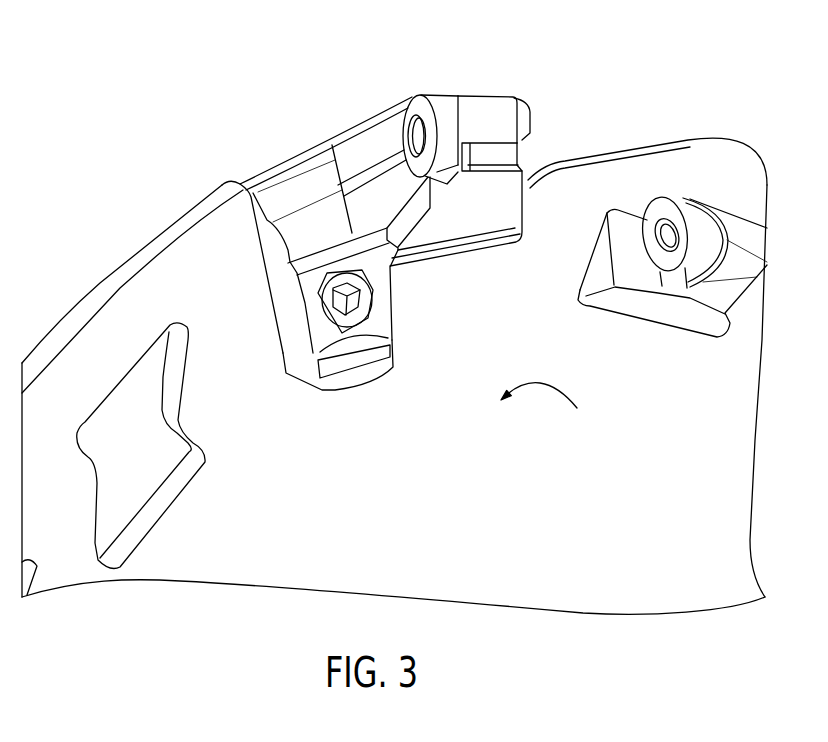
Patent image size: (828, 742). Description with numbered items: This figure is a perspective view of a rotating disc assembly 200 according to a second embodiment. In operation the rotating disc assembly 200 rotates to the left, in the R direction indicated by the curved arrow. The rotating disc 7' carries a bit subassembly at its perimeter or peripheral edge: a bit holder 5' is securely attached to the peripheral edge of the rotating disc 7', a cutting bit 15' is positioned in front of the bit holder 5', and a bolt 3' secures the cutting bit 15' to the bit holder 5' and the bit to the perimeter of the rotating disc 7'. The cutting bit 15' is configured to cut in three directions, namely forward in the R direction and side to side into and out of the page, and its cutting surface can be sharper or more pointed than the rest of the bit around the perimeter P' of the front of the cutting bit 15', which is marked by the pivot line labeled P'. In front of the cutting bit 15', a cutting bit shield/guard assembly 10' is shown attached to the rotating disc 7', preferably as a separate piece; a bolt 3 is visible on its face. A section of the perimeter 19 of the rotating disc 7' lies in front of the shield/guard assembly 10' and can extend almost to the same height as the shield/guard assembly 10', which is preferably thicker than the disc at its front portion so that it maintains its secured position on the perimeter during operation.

The rotating disc assembly 200 is at (198, 103).
The section of the perimeter 19 is at (153, 259).
The cutting bit shield/guard assembly 10' is at (340, 243).
The bolt 3 is at (367, 301).
The perimeter P' is at (469, 102).
The cutting bit 15' is at (434, 113).
The bit holder 5' is at (487, 99).
The bolt 3' is at (465, 169).
The rotating disc 7' is at (672, 227).
The R direction R is at (539, 380).